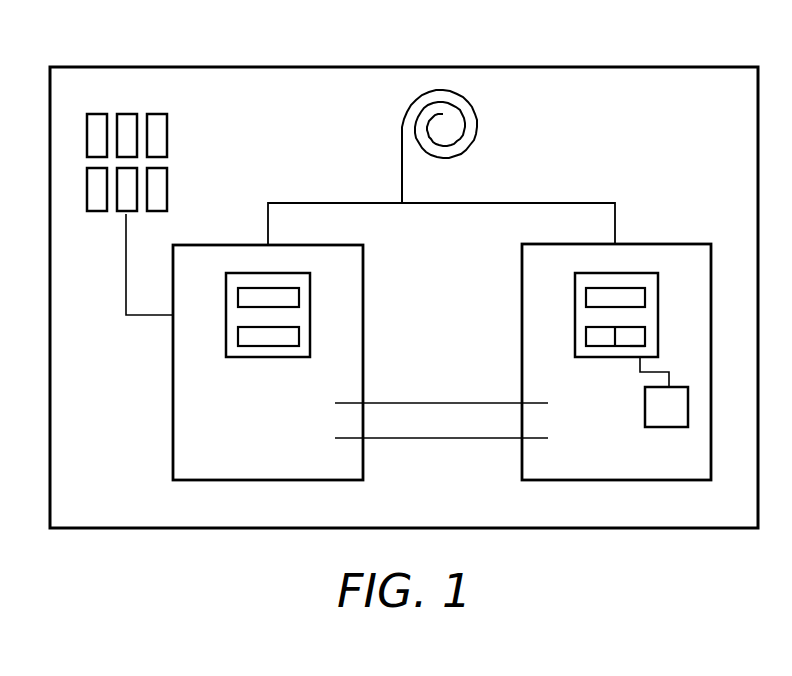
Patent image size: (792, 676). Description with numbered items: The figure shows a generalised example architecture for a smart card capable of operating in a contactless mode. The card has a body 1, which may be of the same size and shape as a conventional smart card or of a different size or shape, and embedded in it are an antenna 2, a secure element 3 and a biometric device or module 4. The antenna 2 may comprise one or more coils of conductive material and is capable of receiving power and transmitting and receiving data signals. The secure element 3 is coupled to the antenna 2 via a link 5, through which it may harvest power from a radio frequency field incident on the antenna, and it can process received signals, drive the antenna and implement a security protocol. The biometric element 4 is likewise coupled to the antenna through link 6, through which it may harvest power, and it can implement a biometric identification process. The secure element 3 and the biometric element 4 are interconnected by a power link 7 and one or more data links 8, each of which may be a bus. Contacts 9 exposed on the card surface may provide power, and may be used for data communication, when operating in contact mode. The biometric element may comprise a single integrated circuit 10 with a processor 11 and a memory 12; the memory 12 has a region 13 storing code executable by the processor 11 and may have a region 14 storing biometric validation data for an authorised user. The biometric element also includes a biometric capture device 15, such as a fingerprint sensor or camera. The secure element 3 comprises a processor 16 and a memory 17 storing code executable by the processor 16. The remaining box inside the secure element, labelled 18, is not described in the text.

The body 1 is at (738, 67).
The antenna 2 is at (445, 89).
The secure element 3 is at (189, 245).
The biometric device or module 4 is at (690, 244).
The link 5 is at (316, 203).
The link 6 is at (563, 203).
The power link 7 is at (442, 403).
The data links 8 is at (442, 438).
The contacts 9 is at (122, 114).
The integrated circuit 10 is at (637, 273).
The processor 11 is at (586, 292).
The memory 12 is at (586, 331).
The region 13 is at (600, 347).
The region 14 is at (630, 347).
The biometric capture device 15 is at (668, 428).
The processor 16 is at (300, 294).
The memory 17 is at (300, 333).
The control unit 18 is at (242, 273).